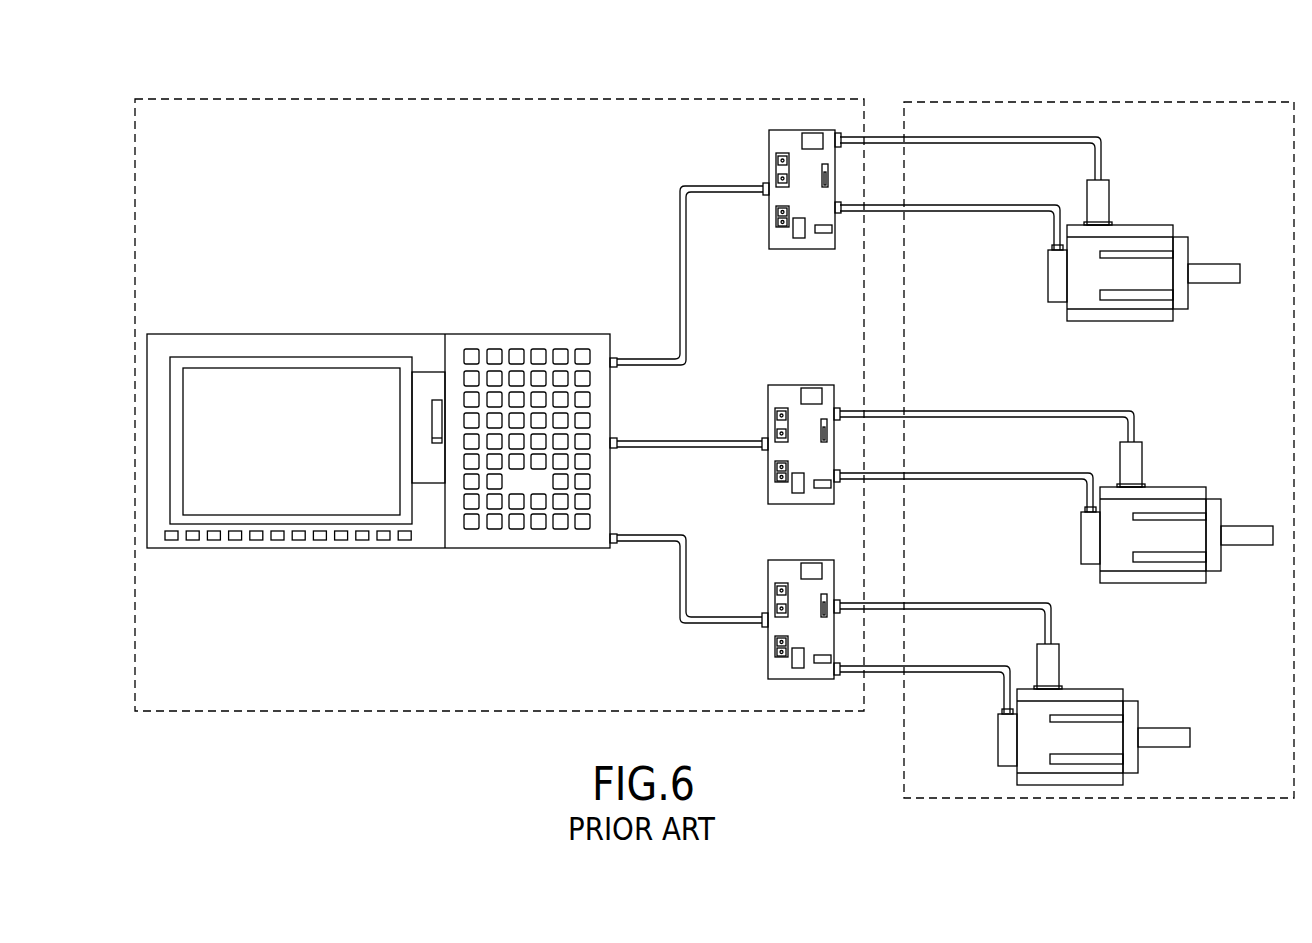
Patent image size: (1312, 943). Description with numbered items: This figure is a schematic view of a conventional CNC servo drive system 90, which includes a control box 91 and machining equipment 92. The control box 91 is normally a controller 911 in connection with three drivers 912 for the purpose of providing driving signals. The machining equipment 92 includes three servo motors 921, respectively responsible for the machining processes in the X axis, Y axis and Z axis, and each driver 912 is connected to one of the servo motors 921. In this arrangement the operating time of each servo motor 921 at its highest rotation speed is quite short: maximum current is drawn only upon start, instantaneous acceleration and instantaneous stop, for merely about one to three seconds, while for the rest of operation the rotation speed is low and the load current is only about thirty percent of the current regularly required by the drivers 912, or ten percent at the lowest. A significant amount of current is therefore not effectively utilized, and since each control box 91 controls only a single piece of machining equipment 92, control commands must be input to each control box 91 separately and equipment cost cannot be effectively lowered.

The CNC servo drive system 90 is at (247, 750).
The control box 91 is at (393, 93).
The controller 911 is at (522, 340).
The driver 912 is at (778, 138).
The machining equipment 92 is at (898, 733).
The servo motor 921 is at (1147, 231).